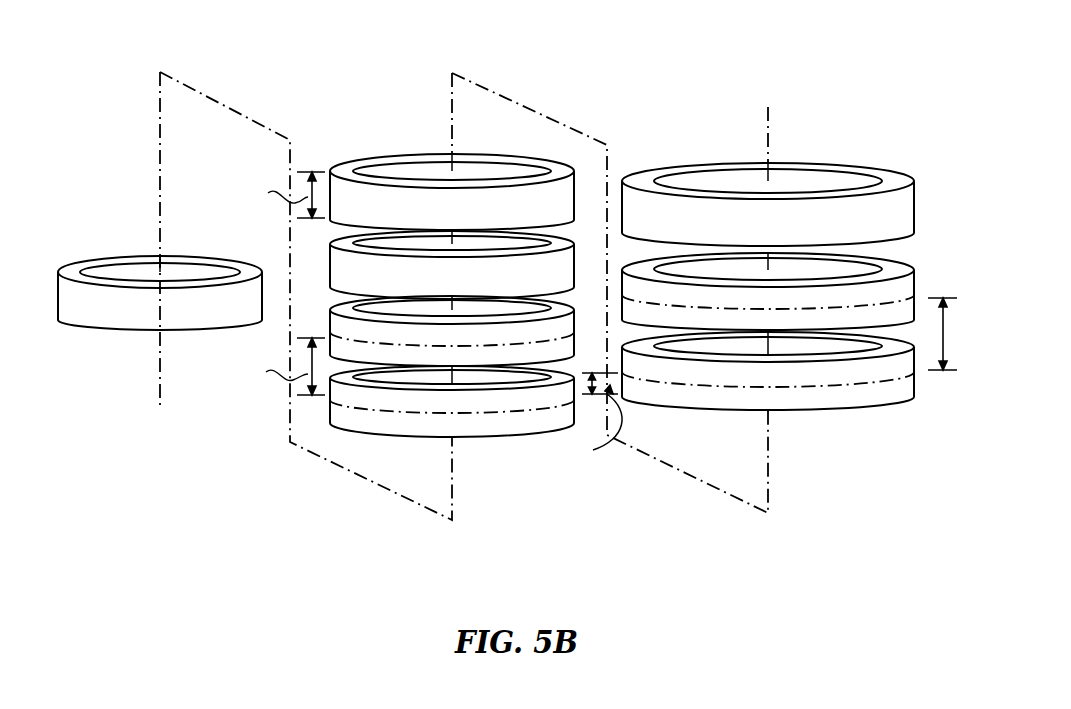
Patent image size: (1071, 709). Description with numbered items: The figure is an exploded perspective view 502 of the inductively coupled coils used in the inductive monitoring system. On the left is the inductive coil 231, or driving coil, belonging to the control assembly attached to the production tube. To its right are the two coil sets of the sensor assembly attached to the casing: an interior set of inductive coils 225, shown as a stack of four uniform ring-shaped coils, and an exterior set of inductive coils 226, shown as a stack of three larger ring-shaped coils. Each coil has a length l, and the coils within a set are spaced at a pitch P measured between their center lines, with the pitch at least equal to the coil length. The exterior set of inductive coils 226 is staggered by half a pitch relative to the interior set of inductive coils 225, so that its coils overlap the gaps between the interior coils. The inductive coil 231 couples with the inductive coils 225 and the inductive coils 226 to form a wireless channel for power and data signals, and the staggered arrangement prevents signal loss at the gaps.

The exploded perspective view 502 is at (882, 49).
The inductive coil 231 is at (113, 310).
The interior set of inductive coils 225 is at (383, 202).
The exterior set of inductive coils 226 is at (700, 217).